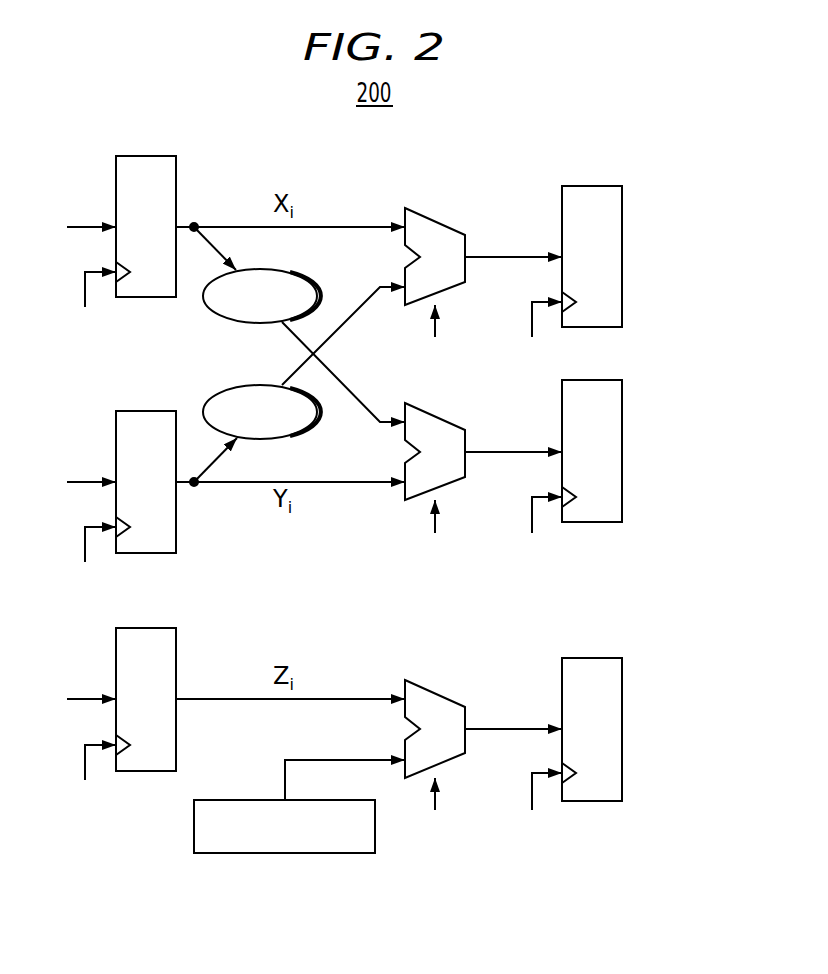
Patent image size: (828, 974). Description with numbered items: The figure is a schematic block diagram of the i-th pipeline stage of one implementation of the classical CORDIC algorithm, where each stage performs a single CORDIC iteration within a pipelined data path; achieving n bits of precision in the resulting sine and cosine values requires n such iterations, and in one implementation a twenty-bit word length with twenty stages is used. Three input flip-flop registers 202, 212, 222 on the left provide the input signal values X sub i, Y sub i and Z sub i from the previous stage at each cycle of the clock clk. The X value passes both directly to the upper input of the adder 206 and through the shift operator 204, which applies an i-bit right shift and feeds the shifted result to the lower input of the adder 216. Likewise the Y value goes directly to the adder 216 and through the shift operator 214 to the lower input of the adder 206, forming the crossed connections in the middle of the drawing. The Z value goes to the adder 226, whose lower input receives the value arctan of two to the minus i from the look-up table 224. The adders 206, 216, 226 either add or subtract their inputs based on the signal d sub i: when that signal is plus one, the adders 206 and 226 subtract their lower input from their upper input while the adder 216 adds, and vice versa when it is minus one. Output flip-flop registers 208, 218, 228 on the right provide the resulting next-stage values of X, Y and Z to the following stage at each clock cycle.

The input register 202 is at (116, 172).
The shift operator 204 is at (290, 271).
The adder 206 is at (430, 218).
The output register 208 is at (622, 201).
The input register 212 is at (116, 428).
The shift operator 214 is at (290, 437).
The adder 216 is at (430, 413).
The output register 218 is at (622, 395).
The input register 222 is at (116, 646).
The look-up table 224 is at (289, 853).
The adder 226 is at (430, 690).
The output register 228 is at (622, 673).